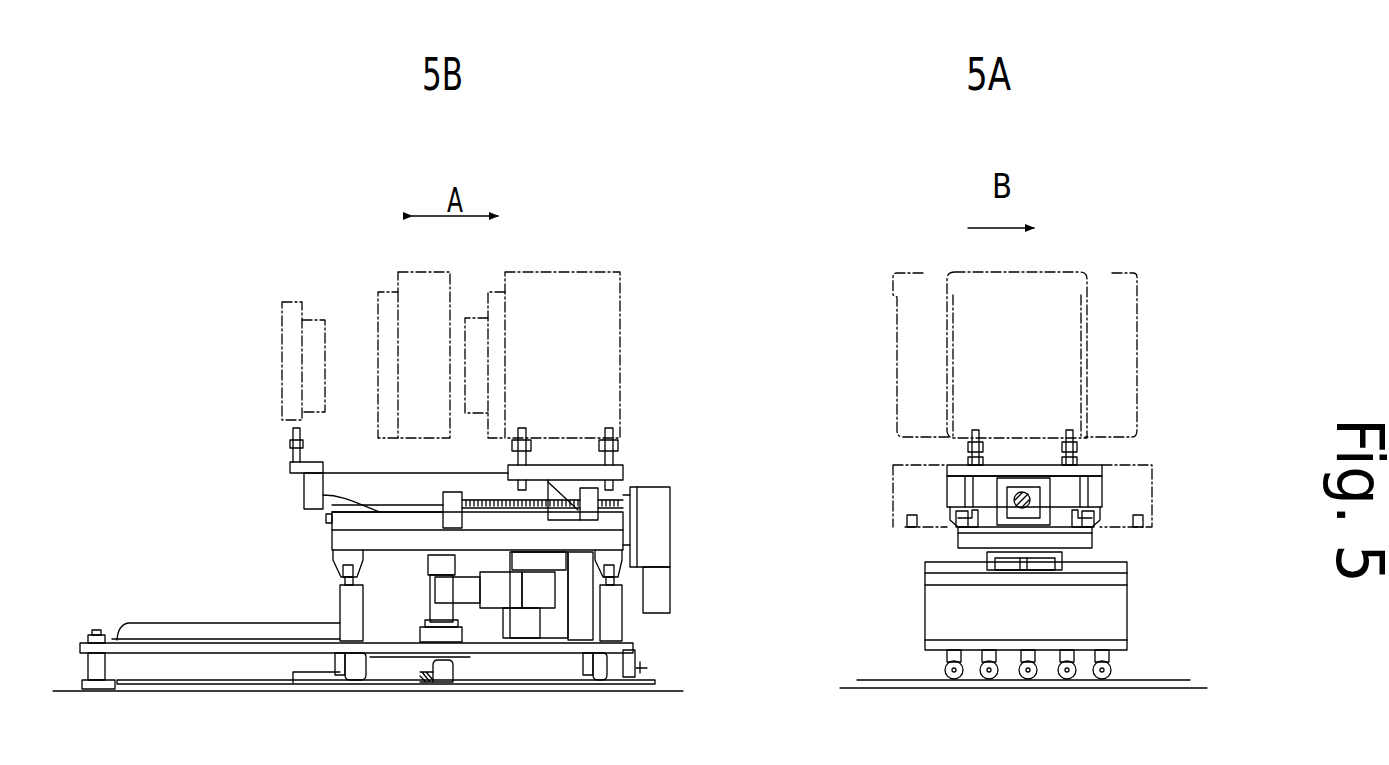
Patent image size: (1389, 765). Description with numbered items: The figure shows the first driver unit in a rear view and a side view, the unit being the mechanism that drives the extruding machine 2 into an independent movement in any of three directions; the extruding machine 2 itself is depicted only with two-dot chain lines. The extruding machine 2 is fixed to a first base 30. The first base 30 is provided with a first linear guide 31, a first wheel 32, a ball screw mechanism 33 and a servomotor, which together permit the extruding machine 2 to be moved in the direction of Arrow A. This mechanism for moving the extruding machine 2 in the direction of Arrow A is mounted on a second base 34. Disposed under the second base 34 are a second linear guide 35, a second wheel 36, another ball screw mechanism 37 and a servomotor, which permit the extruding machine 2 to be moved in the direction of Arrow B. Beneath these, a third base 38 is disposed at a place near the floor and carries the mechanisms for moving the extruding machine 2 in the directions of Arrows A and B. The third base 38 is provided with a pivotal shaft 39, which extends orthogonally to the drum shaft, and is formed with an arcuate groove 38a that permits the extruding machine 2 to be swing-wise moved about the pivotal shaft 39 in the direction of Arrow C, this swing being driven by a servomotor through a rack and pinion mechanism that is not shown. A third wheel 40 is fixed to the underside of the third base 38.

In FIG. 5B, the extruding machine 2 is at (532, 275).
In FIG. 5A, the extruding machine 2 is at (1037, 270).
In FIG. 5B, the first base 30 is at (573, 464).
In FIG. 5A, the first base 30 is at (1105, 447).
In FIG. 5B, the first linear guide 31 is at (304, 485).
In FIG. 5A, the first wheel 32 is at (960, 527).
In FIG. 5B, the ball screw mechanism 33 is at (630, 487).
In FIG. 5A, the ball screw mechanism 33 is at (1022, 491).
In FIG. 5B, the second base 34 is at (333, 540).
In FIG. 5A, the second linear guide 35 is at (1127, 571).
In FIG. 5B, the second wheel 36 is at (340, 576).
In FIG. 5B, the ball screw mechanism 37 is at (545, 650).
In FIG. 5B, the third base 38 is at (155, 644).
In FIG. 5B, the arcuate groove 38a is at (420, 676).
In FIG. 5B, the pivotal shaft 39 is at (95, 633).
In FIG. 5B, the third wheel 40 is at (338, 674).